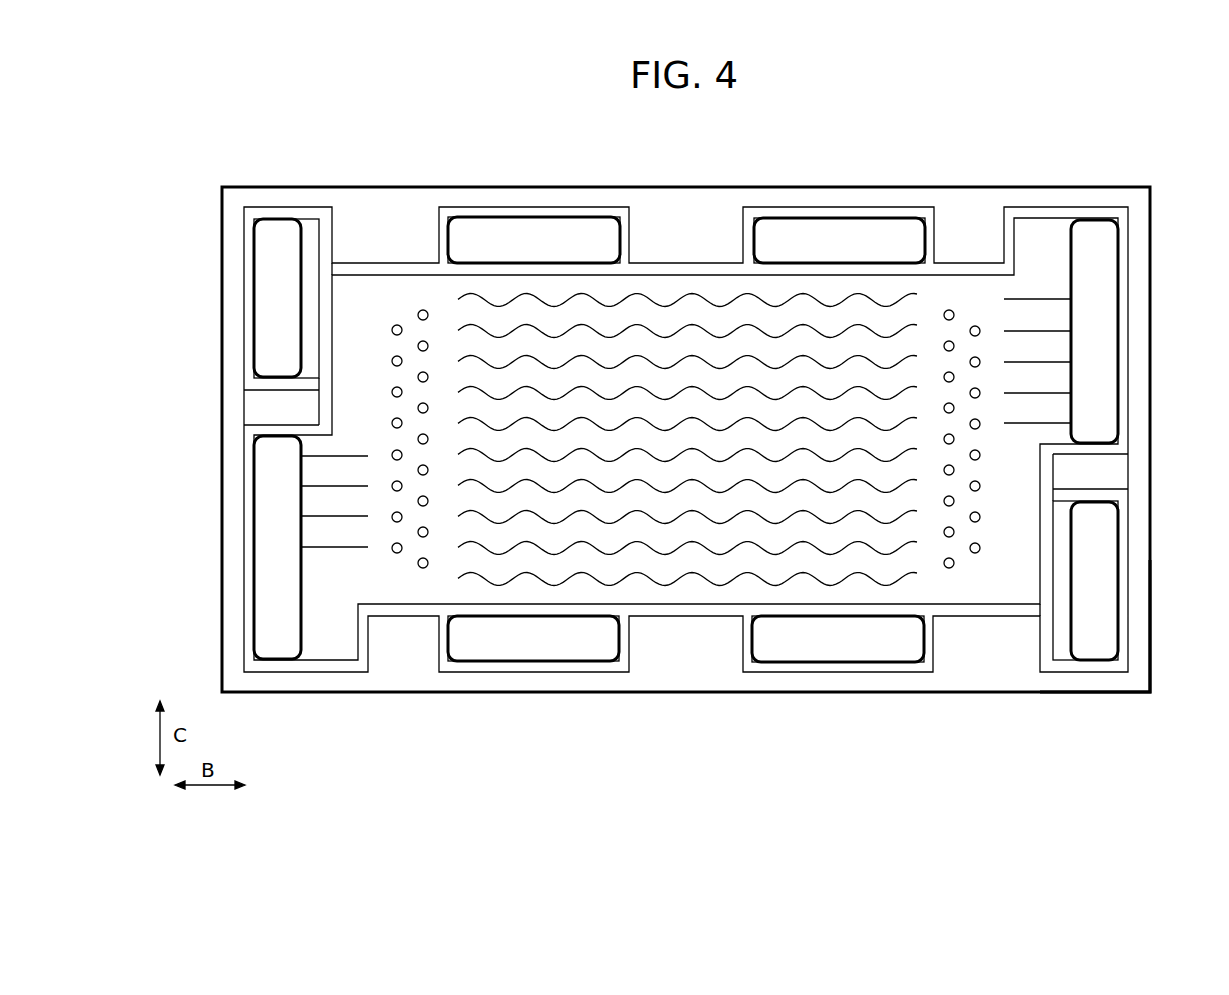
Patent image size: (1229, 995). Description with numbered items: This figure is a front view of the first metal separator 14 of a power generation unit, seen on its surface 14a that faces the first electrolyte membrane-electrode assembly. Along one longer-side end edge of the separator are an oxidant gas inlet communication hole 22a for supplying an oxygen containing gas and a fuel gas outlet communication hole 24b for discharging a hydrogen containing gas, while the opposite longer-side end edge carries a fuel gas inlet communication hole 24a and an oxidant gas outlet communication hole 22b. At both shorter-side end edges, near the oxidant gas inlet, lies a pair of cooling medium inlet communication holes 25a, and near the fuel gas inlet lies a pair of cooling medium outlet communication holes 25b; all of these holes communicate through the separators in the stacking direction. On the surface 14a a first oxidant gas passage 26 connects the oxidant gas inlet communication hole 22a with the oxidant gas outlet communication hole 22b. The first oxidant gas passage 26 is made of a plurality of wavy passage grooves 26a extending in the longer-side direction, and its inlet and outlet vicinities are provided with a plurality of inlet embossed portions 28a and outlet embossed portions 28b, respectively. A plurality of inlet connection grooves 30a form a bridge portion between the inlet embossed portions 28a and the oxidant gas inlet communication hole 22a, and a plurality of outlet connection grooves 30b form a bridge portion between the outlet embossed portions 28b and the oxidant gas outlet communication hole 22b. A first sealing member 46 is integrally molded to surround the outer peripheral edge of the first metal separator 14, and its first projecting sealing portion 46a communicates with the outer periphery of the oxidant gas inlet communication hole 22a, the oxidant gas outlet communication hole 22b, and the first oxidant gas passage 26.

The first metal separator 14 is at (760, 124).
The surface of the first metal separator 14a is at (969, 666).
The oxidant gas inlet communication hole 22a is at (1088, 316).
The oxidant gas outlet communication hole 22b is at (273, 517).
The fuel gas inlet communication hole 24a is at (268, 300).
The fuel gas outlet communication hole 24b is at (1103, 578).
The cooling medium inlet communication holes 25a is at (842, 237).
The cooling medium outlet communication holes 25b is at (531, 237).
The first oxidant gas passage 26 is at (683, 323).
The wavy passage grooves 26a is at (706, 392).
The inlet embossed portions 28a is at (948, 346).
The outlet embossed portions 28b is at (422, 537).
The inlet connection grooves 30a is at (1043, 404).
The outlet connection grooves 30b is at (328, 473).
The first sealing member 46 is at (610, 693).
The first projecting sealing portion 46a is at (677, 616).